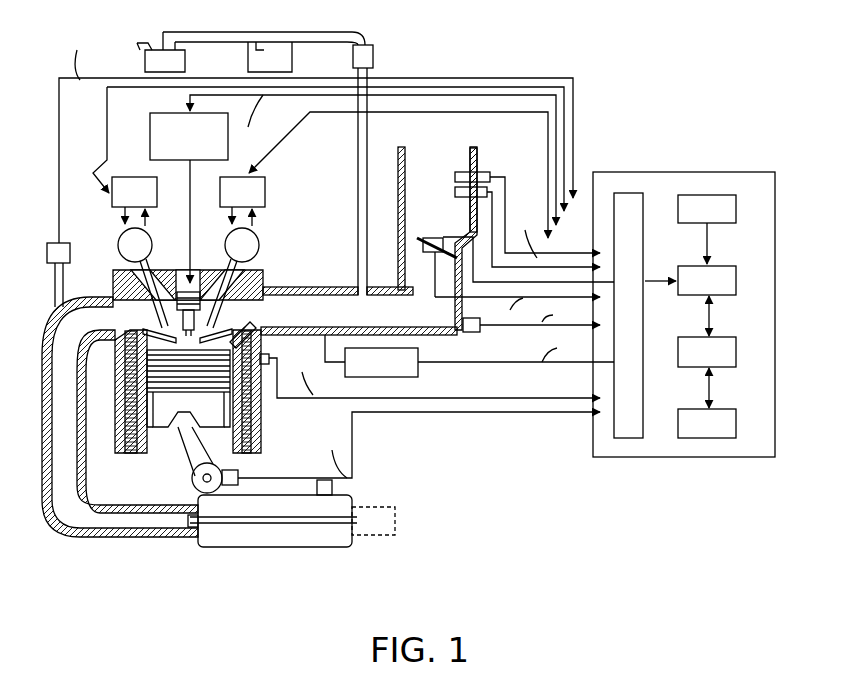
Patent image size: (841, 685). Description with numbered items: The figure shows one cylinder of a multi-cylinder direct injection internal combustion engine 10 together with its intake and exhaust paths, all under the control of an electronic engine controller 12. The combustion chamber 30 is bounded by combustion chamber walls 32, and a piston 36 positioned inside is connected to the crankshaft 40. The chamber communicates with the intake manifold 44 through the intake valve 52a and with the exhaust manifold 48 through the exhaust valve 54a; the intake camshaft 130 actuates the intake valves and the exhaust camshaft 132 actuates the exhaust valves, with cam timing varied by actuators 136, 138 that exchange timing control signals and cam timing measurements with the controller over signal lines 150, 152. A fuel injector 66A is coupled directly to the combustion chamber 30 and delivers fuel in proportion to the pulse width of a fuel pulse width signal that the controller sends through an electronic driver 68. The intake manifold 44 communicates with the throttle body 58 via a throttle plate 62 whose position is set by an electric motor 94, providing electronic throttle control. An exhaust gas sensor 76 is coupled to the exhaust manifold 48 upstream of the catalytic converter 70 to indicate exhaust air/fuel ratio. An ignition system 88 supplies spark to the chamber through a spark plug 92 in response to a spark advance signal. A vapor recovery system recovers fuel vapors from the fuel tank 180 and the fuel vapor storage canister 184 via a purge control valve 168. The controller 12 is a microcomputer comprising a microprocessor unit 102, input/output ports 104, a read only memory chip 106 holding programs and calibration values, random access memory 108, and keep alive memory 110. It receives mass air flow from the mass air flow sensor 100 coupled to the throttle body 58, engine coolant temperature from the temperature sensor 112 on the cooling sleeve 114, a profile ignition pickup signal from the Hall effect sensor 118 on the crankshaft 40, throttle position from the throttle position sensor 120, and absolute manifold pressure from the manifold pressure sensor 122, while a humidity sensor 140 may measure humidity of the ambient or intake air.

The direct injection internal combustion engine 10 is at (270, 231).
The electronic engine controller 12 is at (683, 170).
The combustion chamber 30 is at (118, 388).
The combustion chamber walls 32 is at (138, 458).
The piston 36 is at (175, 413).
The crankshaft 40 is at (193, 480).
The intake manifold 44 is at (359, 311).
The exhaust manifold 48 is at (62, 342).
The intake valve 52a is at (216, 290).
The exhaust valve 54a is at (157, 327).
The throttle body 58 is at (423, 278).
The throttle plate 62 is at (403, 213).
The fuel injector 66A is at (255, 322).
The electronic driver 68 is at (420, 373).
The catalytic converter 70 is at (266, 490).
The exhaust gas sensor 76 is at (50, 235).
The ignition system 88 is at (167, 115).
The spark plug 92 is at (179, 290).
The electric motor 94 is at (442, 236).
The mass air flow sensor 100 is at (490, 173).
The microprocessor unit 102 is at (737, 286).
The input/output ports 104 is at (645, 228).
The read only memory chip 106 is at (737, 217).
The random access memory 108 is at (737, 356).
The keep alive memory 110 is at (737, 428).
The temperature sensor 112 is at (270, 356).
The cooling sleeve 114 is at (263, 418).
The Hall effect sensor 118 is at (240, 475).
The throttle position sensor 120 is at (422, 243).
The manifold pressure sensor 122 is at (483, 332).
The intake camshaft 130 is at (261, 248).
The exhaust camshaft 132 is at (118, 240).
The cam timing actuator 136 is at (242, 201).
The cam timing actuator 138 is at (134, 201).
The humidity sensor 140 is at (455, 180).
The signal line 150 is at (290, 142).
The signal line 152 is at (107, 123).
The purge control valve 168 is at (375, 53).
The fuel tank 180 is at (187, 62).
The fuel vapor storage canister 184 is at (292, 62).